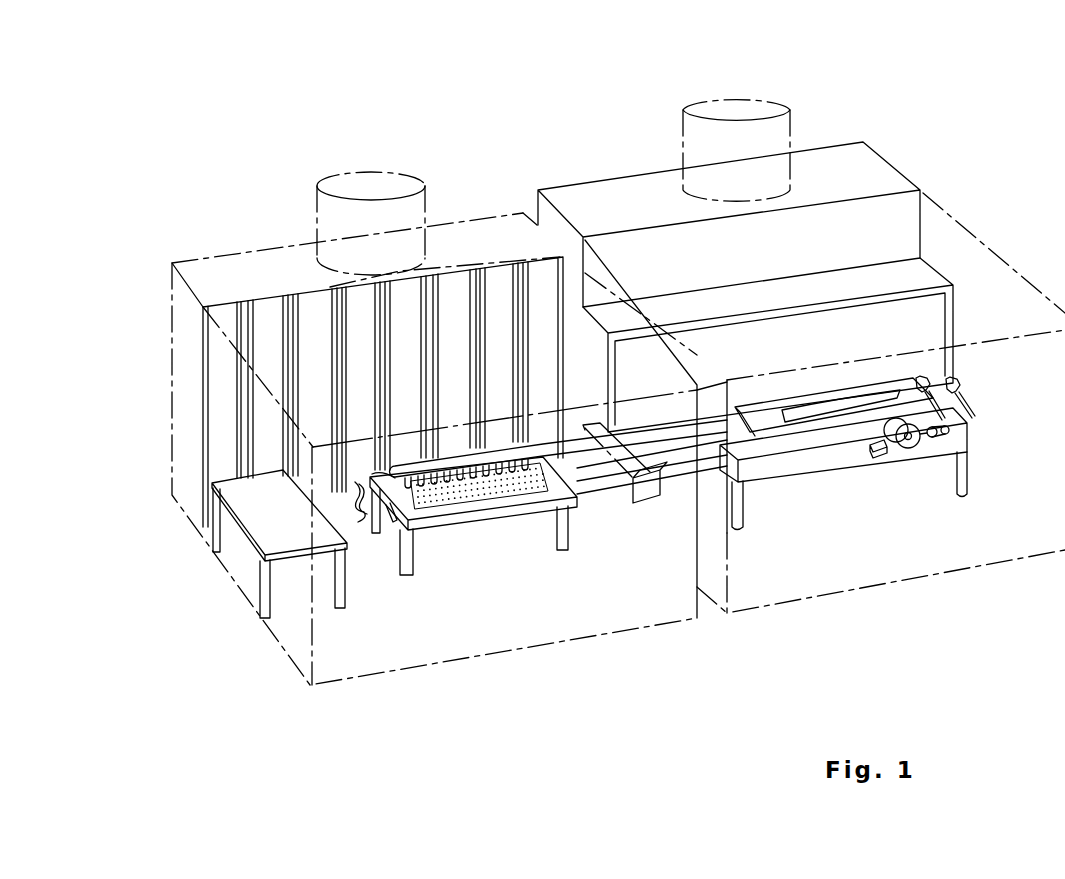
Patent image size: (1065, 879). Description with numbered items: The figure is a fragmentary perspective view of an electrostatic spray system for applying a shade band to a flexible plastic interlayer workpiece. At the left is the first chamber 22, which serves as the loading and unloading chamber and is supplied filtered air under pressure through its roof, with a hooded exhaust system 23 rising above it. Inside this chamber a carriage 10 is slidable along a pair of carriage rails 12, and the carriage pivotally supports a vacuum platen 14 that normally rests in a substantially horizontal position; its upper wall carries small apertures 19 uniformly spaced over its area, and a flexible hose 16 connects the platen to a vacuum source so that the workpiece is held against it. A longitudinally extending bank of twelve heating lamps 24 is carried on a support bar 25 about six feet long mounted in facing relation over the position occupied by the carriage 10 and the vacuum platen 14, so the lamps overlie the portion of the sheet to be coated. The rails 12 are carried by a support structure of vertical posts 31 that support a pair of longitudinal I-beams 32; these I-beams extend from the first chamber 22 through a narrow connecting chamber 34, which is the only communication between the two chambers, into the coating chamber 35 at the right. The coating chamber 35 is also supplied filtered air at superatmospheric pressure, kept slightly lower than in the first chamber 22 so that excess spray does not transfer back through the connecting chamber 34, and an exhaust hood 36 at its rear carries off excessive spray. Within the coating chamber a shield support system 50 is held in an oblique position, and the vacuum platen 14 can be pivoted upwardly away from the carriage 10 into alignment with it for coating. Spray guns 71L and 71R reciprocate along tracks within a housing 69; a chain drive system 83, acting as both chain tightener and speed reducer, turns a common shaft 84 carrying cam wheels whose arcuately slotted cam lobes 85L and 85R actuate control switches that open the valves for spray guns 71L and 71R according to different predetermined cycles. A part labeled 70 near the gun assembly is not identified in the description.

The carriage 10 is at (505, 530).
The carriage rails 12 is at (591, 489).
The vacuum platen 14 is at (476, 516).
The flexible hose 16 is at (355, 483).
The apertures 19 is at (453, 500).
The first chamber 22 is at (225, 250).
The hooded exhaust system 23 is at (358, 172).
The heating lamps 24 is at (385, 476).
The support bar 25 is at (452, 460).
The vertical posts 31 is at (411, 572).
The longitudinal I-beams 32 is at (610, 500).
The narrow connecting chamber 34 is at (642, 505).
The coating chamber 35 is at (838, 138).
The exhaust hood 36 is at (748, 102).
The shield support system 50 is at (392, 524).
The housing 69 is at (792, 478).
The clamp assembly 70 is at (984, 435).
The spray gun 71L is at (918, 375).
The spray gun 71R is at (952, 377).
The chain drive system 83 is at (936, 440).
The common shaft 84 is at (884, 455).
The cam lobes 85L is at (906, 449).
The cam lobes 85R is at (896, 422).